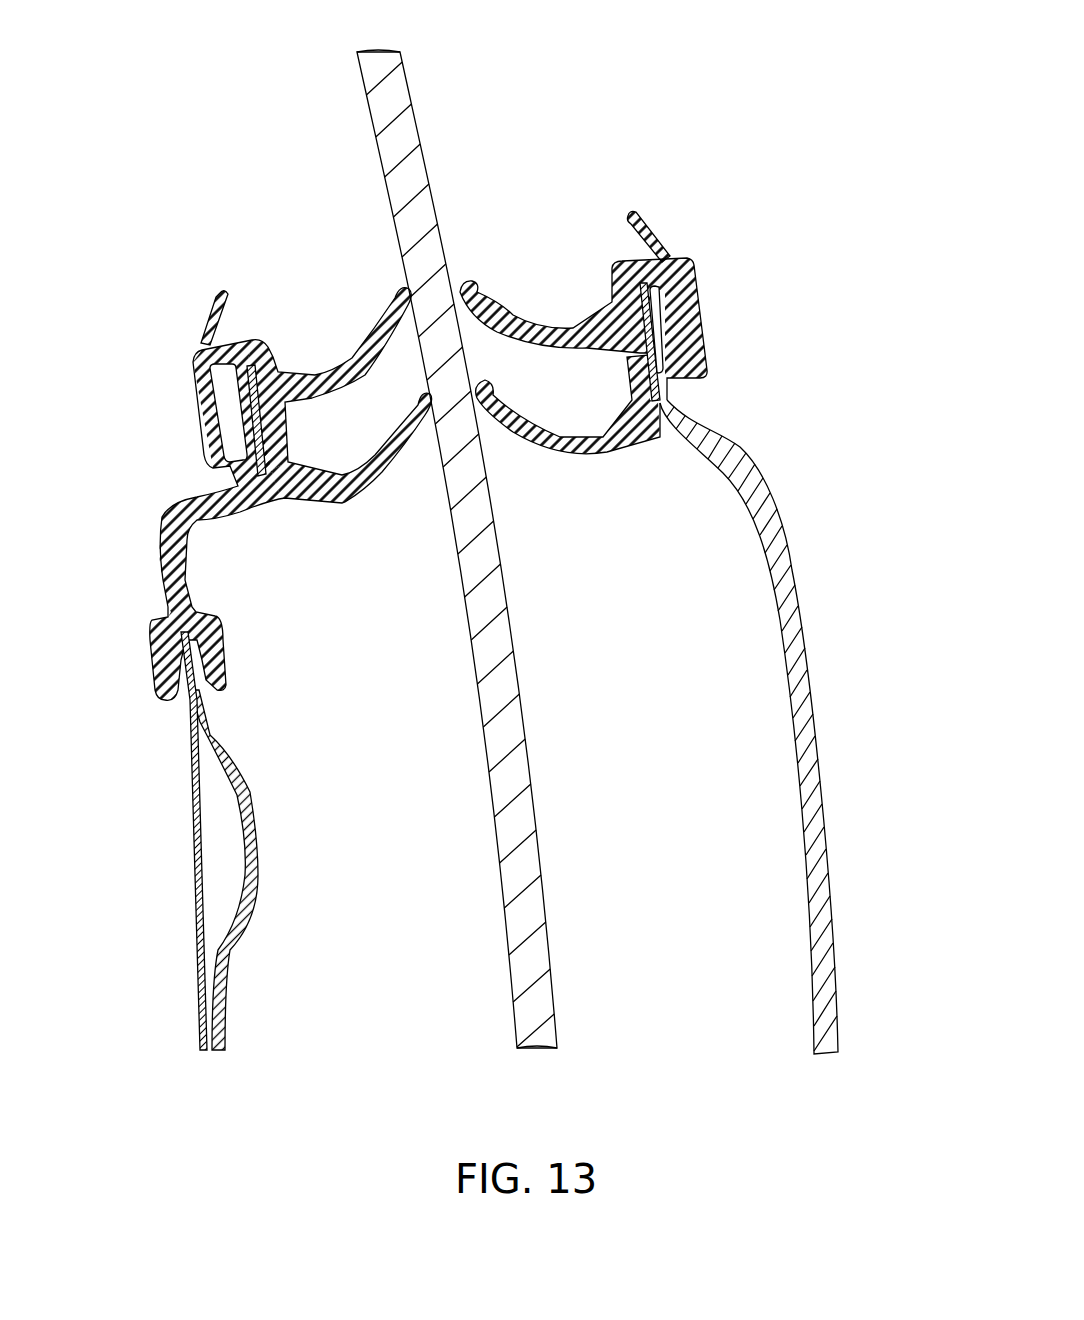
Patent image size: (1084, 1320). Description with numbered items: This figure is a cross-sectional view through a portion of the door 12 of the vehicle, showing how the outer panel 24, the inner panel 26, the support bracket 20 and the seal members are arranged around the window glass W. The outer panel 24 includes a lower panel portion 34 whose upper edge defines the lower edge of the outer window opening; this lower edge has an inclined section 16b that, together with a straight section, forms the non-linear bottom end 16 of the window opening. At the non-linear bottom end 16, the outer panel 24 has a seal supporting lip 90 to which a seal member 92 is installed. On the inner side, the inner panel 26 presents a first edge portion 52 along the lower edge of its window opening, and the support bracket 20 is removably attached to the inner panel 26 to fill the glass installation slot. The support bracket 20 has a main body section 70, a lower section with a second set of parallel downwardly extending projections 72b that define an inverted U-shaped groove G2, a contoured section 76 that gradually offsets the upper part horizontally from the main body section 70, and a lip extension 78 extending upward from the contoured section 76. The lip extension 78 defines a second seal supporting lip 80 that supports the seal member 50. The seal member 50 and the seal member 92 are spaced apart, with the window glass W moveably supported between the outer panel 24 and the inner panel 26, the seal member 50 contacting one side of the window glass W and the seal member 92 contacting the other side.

The door 12 is at (704, 103).
The window glass W is at (414, 176).
The non-linear bottom end 16 is at (659, 381).
The inclined section 16b is at (648, 337).
The support bracket 20 is at (266, 494).
The outer panel 24 is at (750, 727).
The inner panel 26 is at (262, 831).
The lower panel portion 34 is at (791, 713).
The seal member 50 is at (280, 389).
The first edge portion 52 is at (270, 465).
The main body section 70 is at (174, 573).
The second set of parallel projections 72b is at (221, 634).
The contoured section 76 is at (181, 504).
The lip extension 78 is at (262, 440).
The second seal supporting lip 80 is at (215, 356).
The seal supporting lip 90 is at (609, 333).
The seal member 92 is at (674, 272).
The groove G2 is at (182, 695).